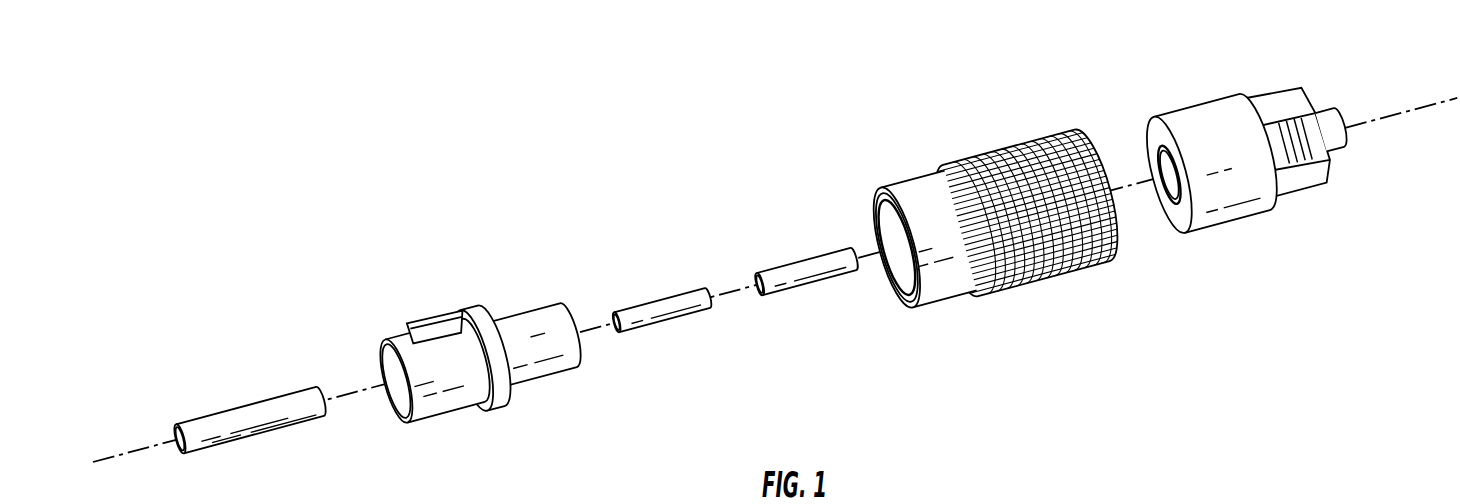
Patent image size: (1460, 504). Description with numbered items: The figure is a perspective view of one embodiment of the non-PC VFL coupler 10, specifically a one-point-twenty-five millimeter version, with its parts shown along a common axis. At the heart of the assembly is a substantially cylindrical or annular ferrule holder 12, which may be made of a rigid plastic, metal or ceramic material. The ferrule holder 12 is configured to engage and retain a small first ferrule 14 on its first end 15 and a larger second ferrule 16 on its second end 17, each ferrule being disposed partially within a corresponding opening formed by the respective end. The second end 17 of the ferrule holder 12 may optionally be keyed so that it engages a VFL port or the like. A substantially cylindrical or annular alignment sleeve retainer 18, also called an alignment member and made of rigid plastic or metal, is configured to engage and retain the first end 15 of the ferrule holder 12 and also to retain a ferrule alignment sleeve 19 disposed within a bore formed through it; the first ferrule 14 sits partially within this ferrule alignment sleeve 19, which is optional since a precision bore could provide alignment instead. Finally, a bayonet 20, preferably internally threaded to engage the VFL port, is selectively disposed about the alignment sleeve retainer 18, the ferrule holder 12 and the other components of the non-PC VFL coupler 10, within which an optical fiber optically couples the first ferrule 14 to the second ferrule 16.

The non-PC VFL coupler 10 is at (747, 170).
The ferrule holder 12 is at (482, 312).
The first ferrule 14 is at (665, 302).
The first end of the ferrule holder 15 is at (582, 355).
The second ferrule 16 is at (255, 400).
The second end of the ferrule holder 17 is at (377, 419).
The alignment sleeve retainer 18 is at (1185, 110).
The ferrule alignment sleeve 19 is at (798, 262).
The bayonet 20 is at (987, 153).